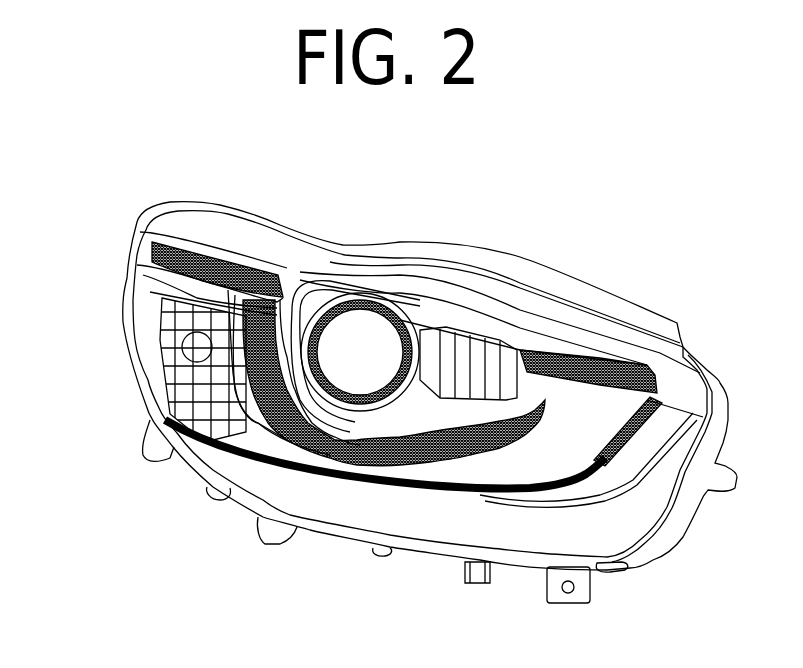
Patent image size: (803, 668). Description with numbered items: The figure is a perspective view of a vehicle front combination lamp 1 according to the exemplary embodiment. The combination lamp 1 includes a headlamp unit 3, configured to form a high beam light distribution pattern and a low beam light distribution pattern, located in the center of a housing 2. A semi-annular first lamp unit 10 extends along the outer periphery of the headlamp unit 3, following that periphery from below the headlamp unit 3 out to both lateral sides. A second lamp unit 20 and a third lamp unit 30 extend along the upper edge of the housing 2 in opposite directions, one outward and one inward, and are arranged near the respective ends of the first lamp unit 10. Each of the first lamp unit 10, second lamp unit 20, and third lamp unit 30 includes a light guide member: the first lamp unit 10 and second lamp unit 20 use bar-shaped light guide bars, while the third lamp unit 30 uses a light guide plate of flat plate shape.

The combination lamp 1 is at (508, 223).
The housing 2 is at (131, 254).
The headlamp unit 3 is at (337, 290).
The first lamp unit 10 is at (486, 462).
The second lamp unit 20 is at (208, 290).
The third lamp unit 30 is at (607, 367).